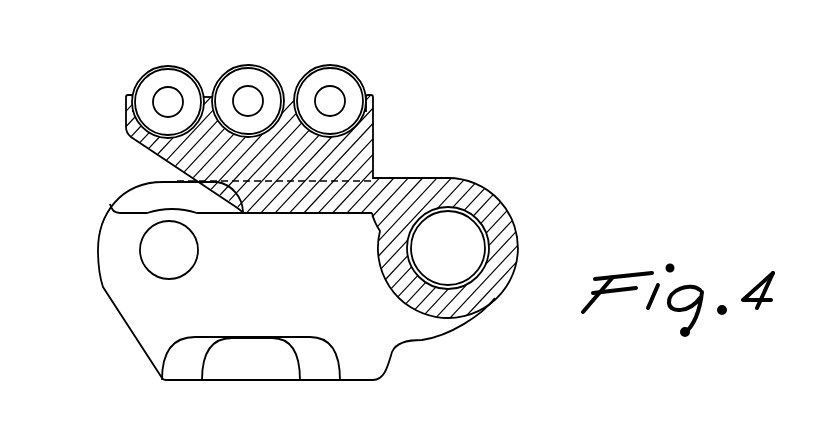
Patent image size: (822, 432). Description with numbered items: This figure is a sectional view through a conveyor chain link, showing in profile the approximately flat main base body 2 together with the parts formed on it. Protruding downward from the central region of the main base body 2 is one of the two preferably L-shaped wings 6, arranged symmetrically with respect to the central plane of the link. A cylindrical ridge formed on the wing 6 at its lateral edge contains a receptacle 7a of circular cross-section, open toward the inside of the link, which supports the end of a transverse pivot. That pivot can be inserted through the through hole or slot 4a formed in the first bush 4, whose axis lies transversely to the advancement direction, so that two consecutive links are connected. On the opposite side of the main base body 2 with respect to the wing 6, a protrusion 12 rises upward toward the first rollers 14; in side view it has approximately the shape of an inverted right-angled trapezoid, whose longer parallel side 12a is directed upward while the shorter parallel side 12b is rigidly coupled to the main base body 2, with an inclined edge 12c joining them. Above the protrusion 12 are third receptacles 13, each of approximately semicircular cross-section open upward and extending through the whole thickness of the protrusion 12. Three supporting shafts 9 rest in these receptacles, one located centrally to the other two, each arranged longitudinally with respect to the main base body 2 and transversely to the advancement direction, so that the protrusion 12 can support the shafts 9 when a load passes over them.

The main base body 2 is at (364, 190).
The first bush 4 is at (486, 287).
The through hole or slot 4a is at (458, 243).
The wings 6 is at (357, 316).
The receptacle 7a is at (166, 250).
The supporting shaft 9 is at (249, 97).
The protrusion 12 is at (379, 103).
The longer parallel side 12a is at (209, 95).
The shorter parallel side 12b is at (285, 184).
The carrier inclined edge 12c is at (168, 158).
The third receptacles 13 is at (349, 113).
The first rollers 14 is at (706, 423).